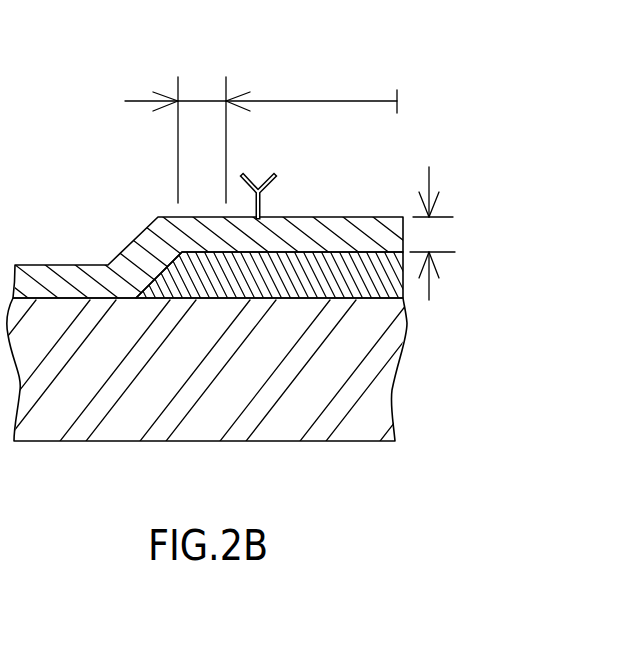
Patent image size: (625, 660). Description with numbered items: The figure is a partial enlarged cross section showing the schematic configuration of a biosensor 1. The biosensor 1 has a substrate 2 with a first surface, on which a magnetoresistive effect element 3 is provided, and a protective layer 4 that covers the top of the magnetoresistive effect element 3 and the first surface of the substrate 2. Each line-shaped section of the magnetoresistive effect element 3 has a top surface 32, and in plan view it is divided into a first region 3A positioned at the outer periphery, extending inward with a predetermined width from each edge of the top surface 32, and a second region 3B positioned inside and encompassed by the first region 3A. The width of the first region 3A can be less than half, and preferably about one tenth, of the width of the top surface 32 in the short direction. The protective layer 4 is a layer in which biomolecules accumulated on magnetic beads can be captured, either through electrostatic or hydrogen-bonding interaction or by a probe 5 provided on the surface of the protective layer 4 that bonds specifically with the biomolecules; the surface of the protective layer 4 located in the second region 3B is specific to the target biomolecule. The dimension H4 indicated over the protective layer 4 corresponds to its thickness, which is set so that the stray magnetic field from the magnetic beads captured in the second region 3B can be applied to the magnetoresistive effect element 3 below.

The biosensor 1 is at (93, 168).
The substrate 2 is at (380, 371).
The magnetoresistive effect element 3 is at (404, 315).
The top surface 32 is at (350, 218).
The protective layer 4 is at (287, 217).
The probe 5 is at (261, 173).
The first region 3A is at (195, 100).
The second region 3B is at (323, 100).
The thickness of coating layer 4 H4 is at (430, 235).